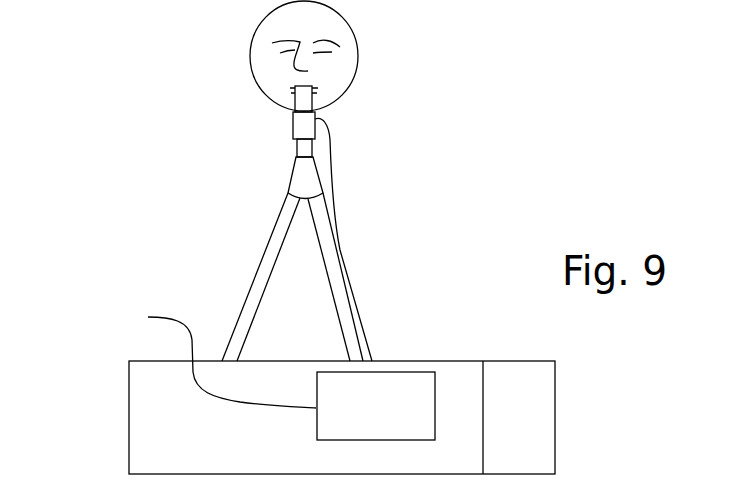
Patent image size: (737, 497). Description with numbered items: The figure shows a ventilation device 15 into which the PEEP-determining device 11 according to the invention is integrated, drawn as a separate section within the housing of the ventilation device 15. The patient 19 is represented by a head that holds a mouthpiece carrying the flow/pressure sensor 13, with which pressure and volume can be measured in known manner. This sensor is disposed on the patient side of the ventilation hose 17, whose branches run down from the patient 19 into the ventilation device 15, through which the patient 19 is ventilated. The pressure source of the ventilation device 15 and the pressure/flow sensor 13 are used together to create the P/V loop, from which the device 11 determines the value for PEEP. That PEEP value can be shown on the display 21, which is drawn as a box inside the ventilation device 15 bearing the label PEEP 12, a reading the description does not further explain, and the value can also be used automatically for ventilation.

The device 11 is at (542, 397).
The PEEP valve 12 is at (376, 406).
The flow/pressure sensor 13 is at (315, 113).
The ventilation device 15 is at (129, 415).
The ventilation hose 17 is at (340, 248).
The patient 19 is at (358, 42).
The display 21 is at (219, 348).